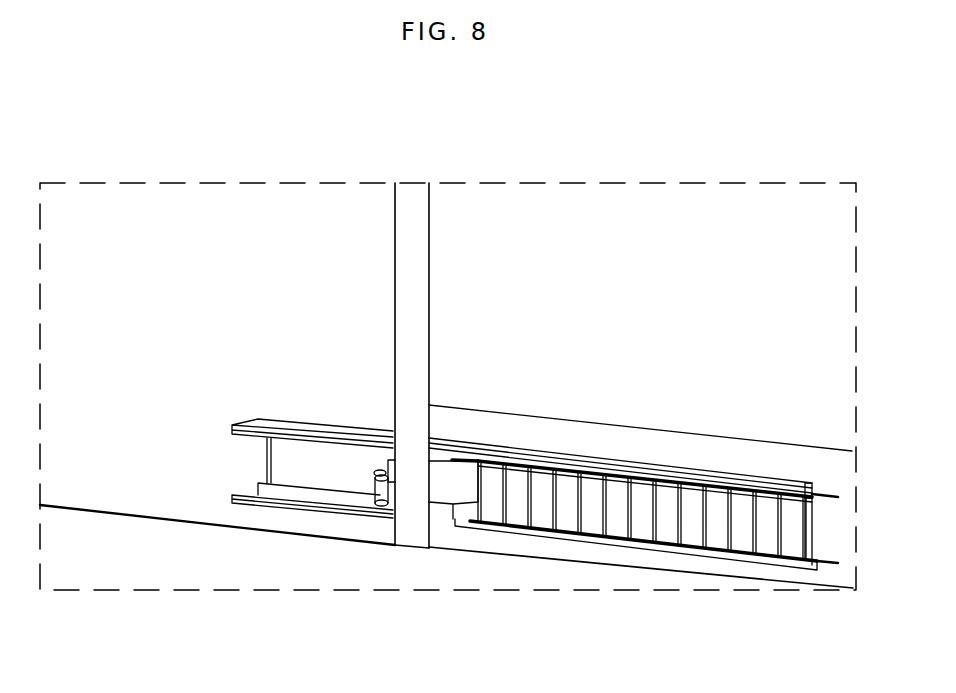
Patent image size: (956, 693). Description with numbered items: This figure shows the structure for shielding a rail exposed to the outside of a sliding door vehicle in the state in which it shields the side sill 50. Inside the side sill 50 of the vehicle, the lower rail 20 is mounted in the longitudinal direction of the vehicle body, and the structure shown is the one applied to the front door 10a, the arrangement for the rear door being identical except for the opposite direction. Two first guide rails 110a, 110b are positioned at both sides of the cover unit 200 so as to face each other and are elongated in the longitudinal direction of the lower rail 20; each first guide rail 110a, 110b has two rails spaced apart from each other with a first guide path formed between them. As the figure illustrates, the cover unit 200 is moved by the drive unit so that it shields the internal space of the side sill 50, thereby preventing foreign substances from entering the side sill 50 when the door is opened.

The front door 10a is at (222, 200).
The lower rail 20 is at (548, 458).
The side sill 50 is at (757, 456).
The first guide rail 110a is at (622, 470).
The first guide rail 110b is at (630, 543).
The cover unit 200 is at (646, 506).